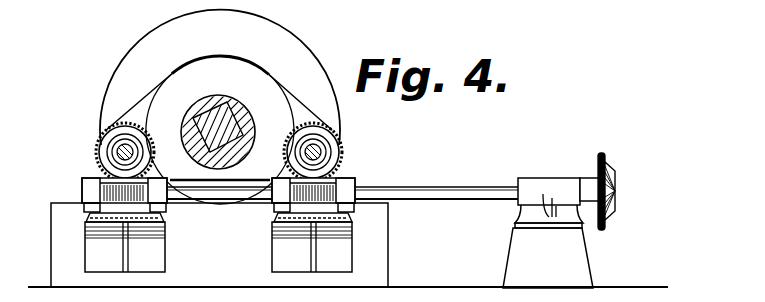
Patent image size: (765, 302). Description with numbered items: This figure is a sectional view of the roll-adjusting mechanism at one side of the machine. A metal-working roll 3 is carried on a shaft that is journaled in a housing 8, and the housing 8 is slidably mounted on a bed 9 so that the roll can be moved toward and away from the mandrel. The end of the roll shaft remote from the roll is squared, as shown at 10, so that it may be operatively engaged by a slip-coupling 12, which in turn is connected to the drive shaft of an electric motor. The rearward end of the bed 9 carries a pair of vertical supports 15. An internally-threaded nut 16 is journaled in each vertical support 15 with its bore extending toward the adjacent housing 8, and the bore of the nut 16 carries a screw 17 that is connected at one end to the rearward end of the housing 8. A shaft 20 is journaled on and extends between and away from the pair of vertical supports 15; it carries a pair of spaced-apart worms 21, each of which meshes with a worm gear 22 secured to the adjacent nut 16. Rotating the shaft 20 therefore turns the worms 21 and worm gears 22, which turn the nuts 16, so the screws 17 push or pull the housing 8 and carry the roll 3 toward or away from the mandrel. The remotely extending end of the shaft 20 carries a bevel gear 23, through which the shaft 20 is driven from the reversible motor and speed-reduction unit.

The metal-working roll 3 is at (128, 62).
The housing 8 is at (248, 75).
The bed 9 is at (386, 264).
The squared shaft end 10 is at (222, 118).
The slip-coupling 12 is at (202, 100).
The vertical support 15 is at (152, 254).
The internally-threaded nut 16 is at (113, 143).
The screw 17 is at (116, 151).
The shaft 20 is at (456, 189).
The worm 21 is at (90, 226).
The worm gear 22 is at (113, 133).
The bevel gear 23 is at (615, 183).